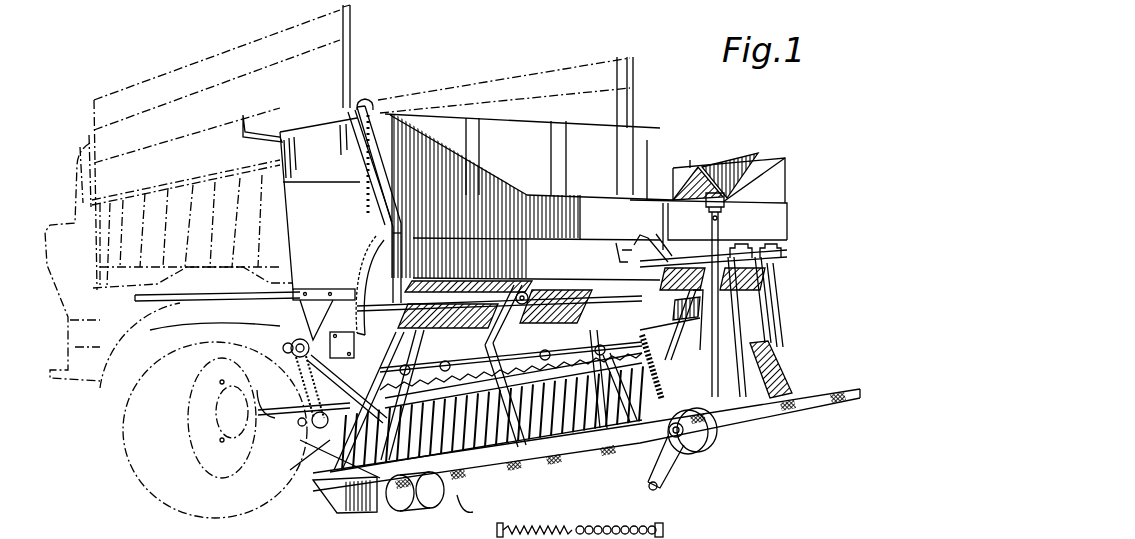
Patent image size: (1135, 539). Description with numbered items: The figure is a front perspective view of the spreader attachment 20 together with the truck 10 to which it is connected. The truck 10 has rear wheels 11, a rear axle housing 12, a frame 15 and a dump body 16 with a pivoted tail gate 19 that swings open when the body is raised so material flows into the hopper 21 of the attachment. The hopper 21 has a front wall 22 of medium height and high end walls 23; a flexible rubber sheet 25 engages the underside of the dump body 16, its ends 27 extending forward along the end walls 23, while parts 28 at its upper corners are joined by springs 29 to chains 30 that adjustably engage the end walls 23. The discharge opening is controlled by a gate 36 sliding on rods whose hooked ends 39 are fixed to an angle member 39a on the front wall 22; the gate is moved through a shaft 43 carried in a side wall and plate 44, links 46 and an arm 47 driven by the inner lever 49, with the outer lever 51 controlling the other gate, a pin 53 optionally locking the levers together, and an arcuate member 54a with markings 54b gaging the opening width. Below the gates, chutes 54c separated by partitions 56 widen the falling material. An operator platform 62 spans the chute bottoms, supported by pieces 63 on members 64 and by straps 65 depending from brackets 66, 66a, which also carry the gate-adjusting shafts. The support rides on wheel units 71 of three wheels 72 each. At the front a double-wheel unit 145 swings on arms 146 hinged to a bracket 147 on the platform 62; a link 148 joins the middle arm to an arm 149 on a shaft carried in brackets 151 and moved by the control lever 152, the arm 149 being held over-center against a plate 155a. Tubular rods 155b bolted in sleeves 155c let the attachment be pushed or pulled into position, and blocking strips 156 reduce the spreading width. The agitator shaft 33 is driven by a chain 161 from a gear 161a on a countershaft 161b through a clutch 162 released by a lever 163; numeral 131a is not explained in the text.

The truck 10 is at (169, 62).
The rear wheels 11 is at (215, 492).
The rear axle housing 12 is at (195, 430).
The frame 15 is at (141, 352).
The dump body 16 is at (345, 85).
The tail gate 19 is at (515, 130).
The spreader attachment 20 is at (798, 187).
The hopper 21 is at (611, 185).
The front wall 22 is at (620, 228).
The end walls 23 is at (337, 163).
The flexible sheet 25 is at (680, 190).
The ends of sheet 27 is at (720, 170).
The parts 28 is at (700, 166).
The springs 29 is at (560, 527).
The chains 30 is at (722, 195).
The agitator shaft 33 is at (290, 349).
The gate 36 is at (470, 365).
The hooked ends 39 is at (542, 330).
The angle member 39a is at (566, 330).
The shaft 43 is at (440, 330).
The plate 44 is at (577, 326).
The links 46 is at (490, 330).
The arm 47 is at (526, 296).
The inner lever 49 is at (390, 135).
The outer lever 51 is at (356, 112).
The pin 53 is at (392, 238).
The arcuate member 54a is at (372, 250).
The markings 54b is at (362, 276).
The chutes 54c is at (345, 508).
The partitions 56 is at (493, 430).
The platform 62 is at (825, 400).
The pieces 63 is at (768, 388).
The members 64 is at (330, 443).
The straps 65 is at (772, 342).
The bracket 66 is at (397, 292).
The bracket 66a is at (616, 295).
The wheel unit 71 is at (429, 511).
The wheels 72 is at (490, 480).
The wheel hub 131a is at (242, 420).
The double-wheel unit 145 is at (727, 441).
The arms 146 is at (668, 470).
The bracket 147 is at (653, 490).
The link 148 is at (668, 380).
The arm 149 is at (660, 248).
The brackets 151 is at (655, 238).
The control lever 152 is at (780, 252).
The plate 155a is at (616, 252).
The tubular rods 155b is at (236, 291).
The sleeves 155c is at (290, 322).
The blocking strips 156 is at (720, 322).
The chain 161 is at (312, 402).
The gear 161a is at (280, 462).
The countershaft 161b is at (306, 428).
The clutch 162 is at (318, 348).
The lever 163 is at (304, 378).